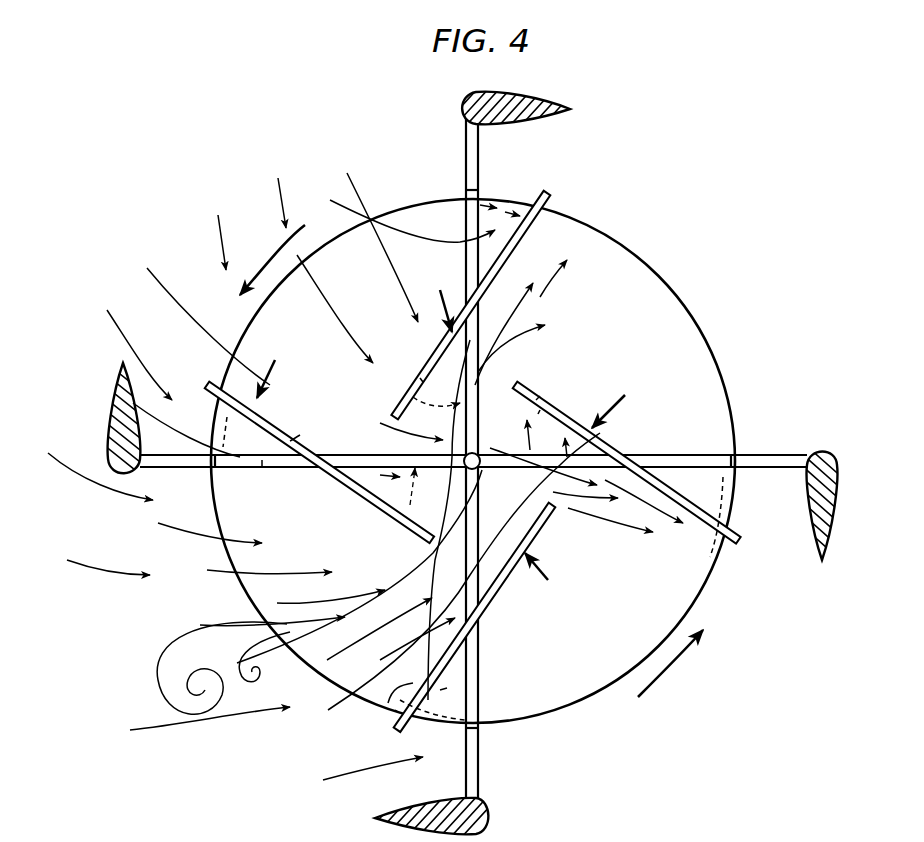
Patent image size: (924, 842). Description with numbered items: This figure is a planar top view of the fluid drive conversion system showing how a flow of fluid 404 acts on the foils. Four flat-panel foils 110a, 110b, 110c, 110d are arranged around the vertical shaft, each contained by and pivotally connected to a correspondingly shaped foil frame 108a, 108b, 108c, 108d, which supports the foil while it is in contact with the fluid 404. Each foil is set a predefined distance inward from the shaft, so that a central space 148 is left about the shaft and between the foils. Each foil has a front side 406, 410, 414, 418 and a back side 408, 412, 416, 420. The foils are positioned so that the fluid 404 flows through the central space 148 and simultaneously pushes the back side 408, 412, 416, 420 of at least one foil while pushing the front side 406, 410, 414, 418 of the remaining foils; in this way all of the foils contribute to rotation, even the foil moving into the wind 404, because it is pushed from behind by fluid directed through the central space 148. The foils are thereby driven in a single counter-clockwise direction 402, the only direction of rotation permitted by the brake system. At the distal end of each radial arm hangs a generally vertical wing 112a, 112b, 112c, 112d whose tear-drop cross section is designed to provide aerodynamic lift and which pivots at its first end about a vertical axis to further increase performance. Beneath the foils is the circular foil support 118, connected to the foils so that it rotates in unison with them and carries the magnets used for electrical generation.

The foil frame 108a is at (277, 467).
The foil frame 108b is at (480, 655).
The foil frame 108c is at (680, 450).
The foil frame 108d is at (462, 212).
The foil 110a is at (284, 366).
The foil 110b is at (554, 582).
The foil 110c is at (624, 396).
The foil 110d is at (442, 297).
The wing 112a is at (113, 383).
The wing 112b is at (375, 818).
The wing 112c is at (832, 530).
The wing 112d is at (547, 113).
The foil support 118 is at (563, 708).
The central space 148 is at (451, 508).
The counter-clockwise direction 402 is at (270, 258).
The flow of fluid 404 is at (183, 172).
The front side of foil 406 is at (300, 435).
The back side of foil 408 is at (262, 460).
The front side of foil 410 is at (395, 710).
The back side of foil 412 is at (447, 688).
The front side of foil 414 is at (536, 400).
The back side of foil 416 is at (540, 410).
The front side of foil 418 is at (424, 405).
The back side of foil 420 is at (420, 378).